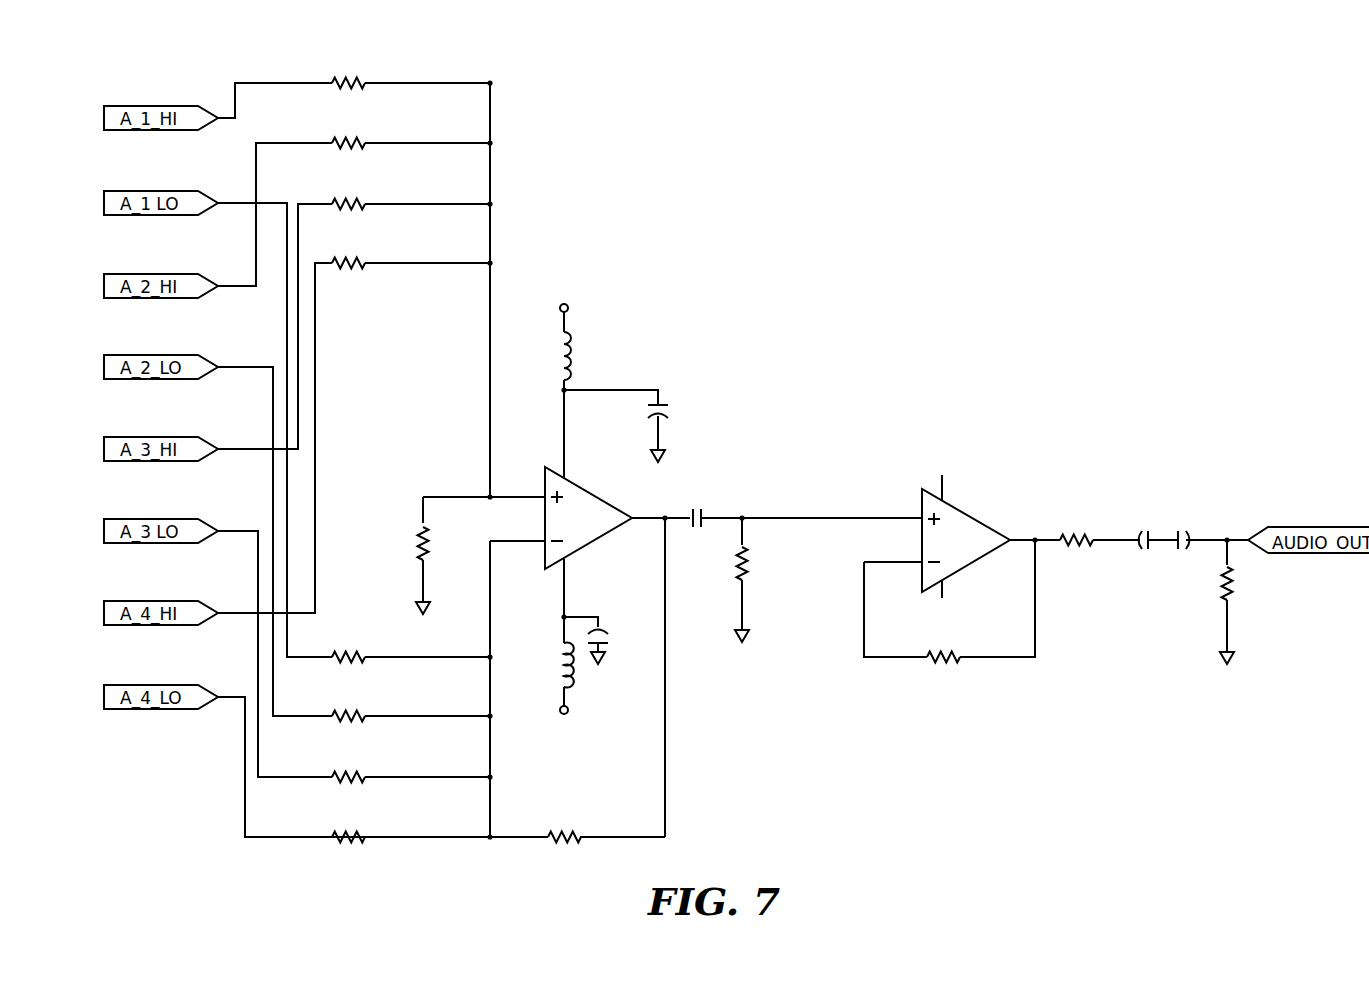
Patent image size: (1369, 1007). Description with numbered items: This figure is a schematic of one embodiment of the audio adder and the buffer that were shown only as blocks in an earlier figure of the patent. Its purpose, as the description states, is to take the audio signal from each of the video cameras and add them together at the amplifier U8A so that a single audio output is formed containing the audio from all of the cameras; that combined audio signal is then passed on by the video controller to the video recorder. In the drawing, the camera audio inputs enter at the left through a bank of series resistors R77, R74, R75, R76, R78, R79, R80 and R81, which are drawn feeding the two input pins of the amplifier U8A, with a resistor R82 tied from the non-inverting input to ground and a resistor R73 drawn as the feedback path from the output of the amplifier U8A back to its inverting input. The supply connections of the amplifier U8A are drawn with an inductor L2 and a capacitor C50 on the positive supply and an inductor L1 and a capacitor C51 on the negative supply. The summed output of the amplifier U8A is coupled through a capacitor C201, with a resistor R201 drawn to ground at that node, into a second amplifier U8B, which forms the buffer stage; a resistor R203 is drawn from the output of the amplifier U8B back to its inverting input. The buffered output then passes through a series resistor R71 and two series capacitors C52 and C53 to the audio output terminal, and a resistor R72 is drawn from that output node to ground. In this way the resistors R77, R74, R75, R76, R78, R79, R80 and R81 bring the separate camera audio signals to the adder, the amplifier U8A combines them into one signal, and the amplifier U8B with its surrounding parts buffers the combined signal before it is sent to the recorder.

The resistor 10K R77 is at (348, 81).
The resistor 10K R74 is at (348, 141).
The resistor 10K R75 is at (348, 202).
The resistor 10K R76 is at (348, 261).
The resistor 10K R78 is at (348, 655).
The resistor 10K R79 is at (348, 714).
The resistor 10K R80 is at (348, 775).
The resistor 10K R81 is at (348, 835).
The resistor 10K R82 is at (441, 567).
The feedback resistor 10K R73 is at (564, 835).
The resistor 10K R201 is at (764, 591).
The feedback resistor 10K R203 is at (979, 612).
The resistor 470 R71 is at (1100, 538).
The resistor 100K R72 is at (1249, 613).
The capacitor 10U 16V C50 is at (635, 434).
The capacitor 10U 16V C51 is at (604, 645).
The capacitor 0.1U C201 is at (702, 520).
The capacitor 10U 16V C52 is at (1153, 546).
The capacitor 10U 16V C53 is at (1209, 546).
The inductor 10UH L1 is at (543, 676).
The inductor 10UH L2 is at (587, 335).
The amplifier U8A is at (588, 503).
The operational amplifier OP2755 U8B is at (963, 545).